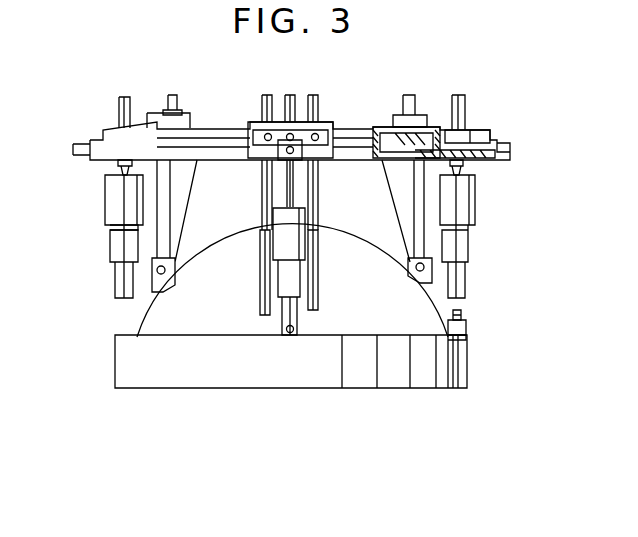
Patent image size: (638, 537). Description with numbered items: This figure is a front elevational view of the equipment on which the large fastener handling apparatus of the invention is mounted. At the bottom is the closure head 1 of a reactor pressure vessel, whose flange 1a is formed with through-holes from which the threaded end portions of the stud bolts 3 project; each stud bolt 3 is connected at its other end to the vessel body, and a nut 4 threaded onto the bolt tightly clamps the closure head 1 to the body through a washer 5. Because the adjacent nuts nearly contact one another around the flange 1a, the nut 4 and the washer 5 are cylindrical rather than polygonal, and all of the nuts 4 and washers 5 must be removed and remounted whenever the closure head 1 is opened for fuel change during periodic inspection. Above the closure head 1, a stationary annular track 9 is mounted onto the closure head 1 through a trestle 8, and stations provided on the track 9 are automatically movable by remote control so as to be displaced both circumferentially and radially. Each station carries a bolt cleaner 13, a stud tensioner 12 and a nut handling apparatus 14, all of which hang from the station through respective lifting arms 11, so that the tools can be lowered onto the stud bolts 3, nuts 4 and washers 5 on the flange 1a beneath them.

The closure head 1 is at (137, 337).
The flange 1a is at (467, 375).
The stud bolt 3 is at (462, 313).
The nut 4 is at (466, 327).
The washer 5 is at (466, 337).
The trestle 8 is at (157, 195).
The stationary annular track 9 is at (222, 125).
The lifting arm 11 is at (262, 190).
The stud tensioner 12 is at (312, 205).
The bolt cleaner 13 is at (260, 282).
The nut handling apparatus 14 is at (318, 282).